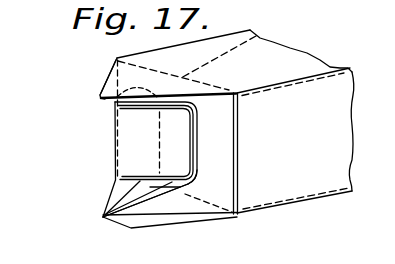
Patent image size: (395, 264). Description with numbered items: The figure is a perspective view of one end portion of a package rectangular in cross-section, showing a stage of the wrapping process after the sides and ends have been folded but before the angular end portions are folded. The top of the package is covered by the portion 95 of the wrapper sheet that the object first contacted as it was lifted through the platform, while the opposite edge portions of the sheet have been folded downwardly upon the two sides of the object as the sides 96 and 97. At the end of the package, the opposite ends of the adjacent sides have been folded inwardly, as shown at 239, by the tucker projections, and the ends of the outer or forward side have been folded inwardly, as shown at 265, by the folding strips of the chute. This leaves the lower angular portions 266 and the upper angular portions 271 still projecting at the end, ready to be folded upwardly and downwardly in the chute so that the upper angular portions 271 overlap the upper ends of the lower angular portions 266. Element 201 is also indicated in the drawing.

The portions of the wrapper sheets 95 is at (141, 57).
The folded side of the wrapper 96 is at (292, 187).
The folded side of the wrapper 97 is at (113, 131).
The top wall 201 is at (262, 40).
The inwardly folded end portions of the wrapper sides 239 is at (202, 163).
The inwardly folded ends of the outer side 265 is at (188, 139).
The lower angular portions 266 is at (104, 214).
The upper angular portions 271 is at (108, 79).